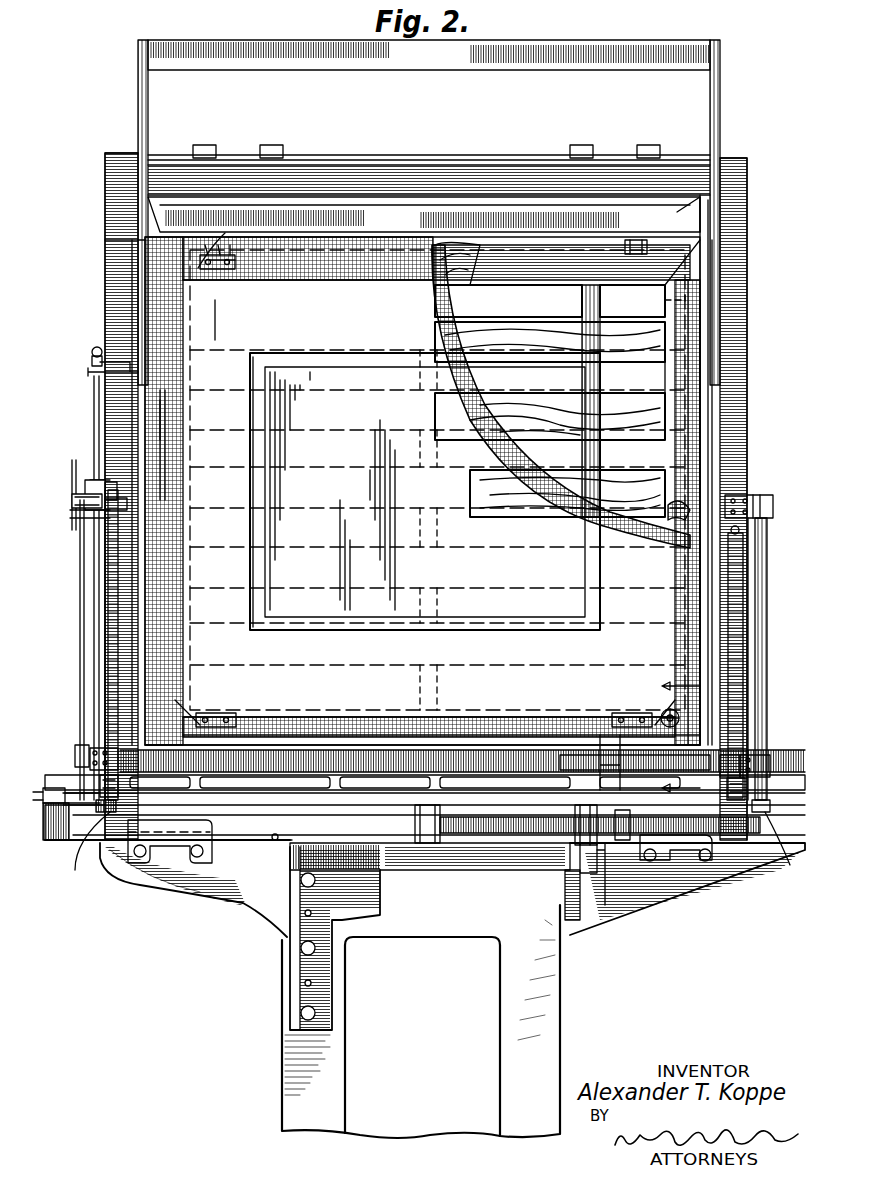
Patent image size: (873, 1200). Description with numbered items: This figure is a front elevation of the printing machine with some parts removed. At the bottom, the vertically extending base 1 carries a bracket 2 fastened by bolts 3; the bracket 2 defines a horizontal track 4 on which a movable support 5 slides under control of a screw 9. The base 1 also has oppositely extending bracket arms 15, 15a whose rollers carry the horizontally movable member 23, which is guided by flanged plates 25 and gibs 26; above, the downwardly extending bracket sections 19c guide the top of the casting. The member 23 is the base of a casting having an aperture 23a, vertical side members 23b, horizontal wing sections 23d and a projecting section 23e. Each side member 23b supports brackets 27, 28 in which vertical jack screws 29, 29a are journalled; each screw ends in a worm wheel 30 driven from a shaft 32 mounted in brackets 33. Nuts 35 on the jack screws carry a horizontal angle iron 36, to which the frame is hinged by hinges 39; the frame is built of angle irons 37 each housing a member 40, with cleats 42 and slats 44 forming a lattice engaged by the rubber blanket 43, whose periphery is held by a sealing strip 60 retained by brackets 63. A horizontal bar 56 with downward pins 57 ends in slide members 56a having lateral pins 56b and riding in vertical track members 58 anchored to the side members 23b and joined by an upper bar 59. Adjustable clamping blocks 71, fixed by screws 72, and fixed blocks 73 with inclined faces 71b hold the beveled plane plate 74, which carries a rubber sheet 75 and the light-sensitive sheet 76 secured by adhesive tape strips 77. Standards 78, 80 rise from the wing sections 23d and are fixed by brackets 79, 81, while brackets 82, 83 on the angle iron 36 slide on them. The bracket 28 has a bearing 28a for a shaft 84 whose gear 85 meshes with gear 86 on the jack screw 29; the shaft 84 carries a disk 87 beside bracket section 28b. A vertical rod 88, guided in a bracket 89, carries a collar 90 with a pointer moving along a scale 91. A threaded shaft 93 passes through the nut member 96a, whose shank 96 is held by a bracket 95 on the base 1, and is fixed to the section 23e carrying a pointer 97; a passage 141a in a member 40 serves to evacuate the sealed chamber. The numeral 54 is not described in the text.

The base 1 is at (292, 1095).
The bracket 2 is at (288, 910).
The bolts 3 is at (300, 1012).
The track 4 is at (273, 842).
The movable support 5 is at (370, 847).
The screw 9 is at (673, 741).
The bracket arm 15 is at (220, 890).
The bracket arm 15a is at (675, 880).
The downwardly extending vertical section 19c is at (270, 147).
The member 23 is at (738, 184).
The aperture 23a is at (358, 197).
The vertical side member 23b is at (125, 300).
The wing section 23d is at (72, 843).
The projecting section 23e is at (438, 195).
The flanged plate 25 is at (200, 795).
The gib 26 is at (168, 855).
The bracket 27 is at (100, 782).
The bracket 28 is at (108, 532).
The bearing 28a is at (90, 480).
The section 28b is at (90, 518).
The jack screw 29 is at (106, 672).
The jack screw 29a is at (745, 716).
The worm wheel 30 is at (100, 812).
The shaft 32 is at (302, 792).
The bracket 33 is at (48, 788).
The nut 35 is at (96, 748).
The angle iron 36 is at (500, 755).
The angle iron 37 is at (550, 275).
The hinge 39 is at (605, 718).
The member 40 is at (478, 260).
The cleat member 42 is at (600, 378).
The flexible member 43 is at (440, 262).
The slat 44 is at (555, 360).
The stud 54 is at (228, 252).
The horizontal bar 56 is at (425, 225).
The slide member 56a is at (703, 220).
The lateral pin 56b is at (667, 300).
The pin 57 is at (635, 255).
The vertical track member 58 is at (140, 96).
The upper bar 59 is at (505, 64).
The sealing strip 60 is at (170, 447).
The bracket 63 is at (160, 418).
The clamping block 71 is at (215, 272).
The inclined face 71b is at (420, 260).
The screw 72 is at (238, 260).
The clamping block 73 is at (218, 713).
The plane plate 74 is at (550, 342).
The rubber sheet 75 is at (561, 396).
The light-sensitive sheet 76 is at (337, 372).
The adhesive tape strip 77 is at (252, 600).
The standard 78 is at (80, 620).
The bracket 79 is at (72, 500).
The vertical standard 80 is at (770, 608).
The bracket 81 is at (760, 500).
The bracket 82 is at (76, 750).
The bracket 83 is at (745, 755).
The shaft 84 is at (88, 482).
The gear 85 is at (112, 482).
The gear 86 is at (116, 498).
The disk 87 is at (72, 478).
The vertical rod 88 is at (94, 399).
The bracket 89 is at (90, 372).
The collar 90 is at (90, 352).
The scale 91 is at (110, 256).
The threaded shaft 93 is at (480, 832).
The bracket 95 is at (585, 900).
The shank 96 is at (600, 860).
The nut member 96a is at (585, 830).
The pointer 97 is at (428, 838).
The passage 141a is at (678, 712).